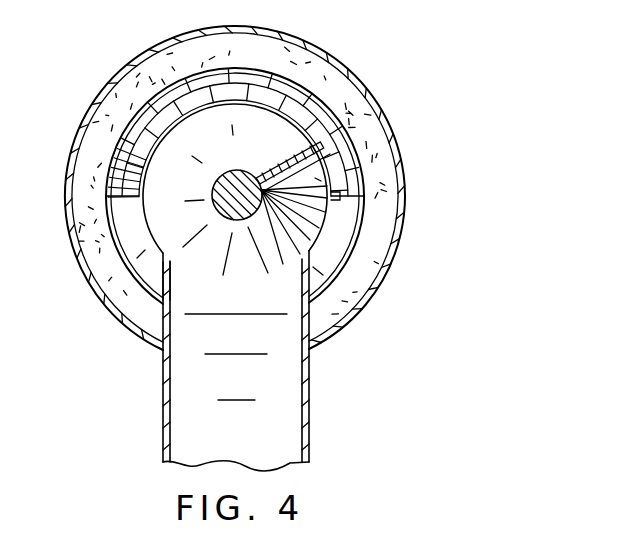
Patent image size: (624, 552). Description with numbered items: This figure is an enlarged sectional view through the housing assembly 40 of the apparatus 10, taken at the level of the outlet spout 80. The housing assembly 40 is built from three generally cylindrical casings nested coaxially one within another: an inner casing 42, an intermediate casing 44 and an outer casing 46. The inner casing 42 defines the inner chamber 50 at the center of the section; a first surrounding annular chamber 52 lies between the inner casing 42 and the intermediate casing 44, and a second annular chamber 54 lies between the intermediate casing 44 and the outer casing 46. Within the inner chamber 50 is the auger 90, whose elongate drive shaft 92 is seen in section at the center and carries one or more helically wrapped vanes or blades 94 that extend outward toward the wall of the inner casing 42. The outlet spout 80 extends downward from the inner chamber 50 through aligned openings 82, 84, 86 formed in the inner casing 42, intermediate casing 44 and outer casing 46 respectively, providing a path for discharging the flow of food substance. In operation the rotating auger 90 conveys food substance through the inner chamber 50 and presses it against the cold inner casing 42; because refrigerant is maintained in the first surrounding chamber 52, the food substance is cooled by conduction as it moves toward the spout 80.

The cylinder lock assembly 10 is at (450, 126).
The housing assembly 40 is at (328, 45).
The second annular chamber 54 is at (162, 68).
The first surrounding annular chamber 52 is at (178, 99).
The intermediate casing 44 is at (118, 160).
The outer casing 46 is at (106, 192).
The inner chamber 50 is at (193, 133).
The inner casing 42 is at (146, 179).
The drive shaft 92 is at (240, 169).
The helically wrapped vanes 94 is at (278, 172).
The auger 90 is at (297, 159).
The opening in inner casing 82 is at (165, 252).
The outlet spout 80 is at (201, 361).
The opening in intermediate casing 84 is at (170, 300).
The opening in outer casing 86 is at (163, 402).